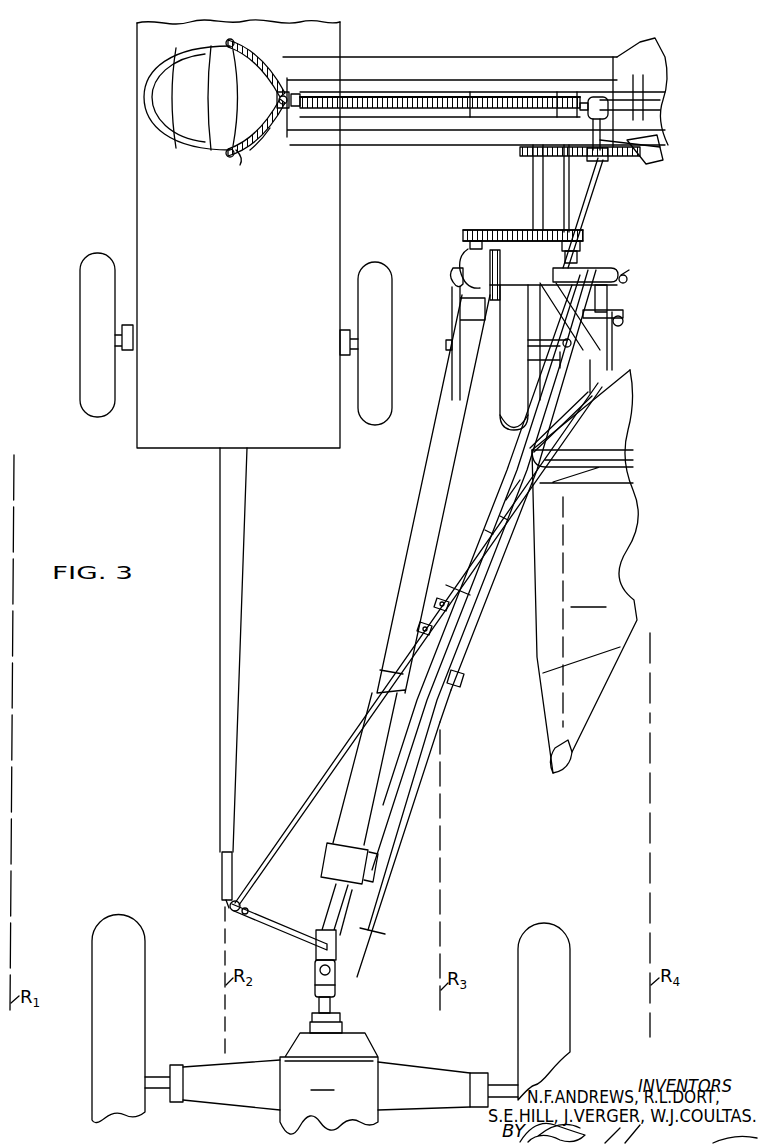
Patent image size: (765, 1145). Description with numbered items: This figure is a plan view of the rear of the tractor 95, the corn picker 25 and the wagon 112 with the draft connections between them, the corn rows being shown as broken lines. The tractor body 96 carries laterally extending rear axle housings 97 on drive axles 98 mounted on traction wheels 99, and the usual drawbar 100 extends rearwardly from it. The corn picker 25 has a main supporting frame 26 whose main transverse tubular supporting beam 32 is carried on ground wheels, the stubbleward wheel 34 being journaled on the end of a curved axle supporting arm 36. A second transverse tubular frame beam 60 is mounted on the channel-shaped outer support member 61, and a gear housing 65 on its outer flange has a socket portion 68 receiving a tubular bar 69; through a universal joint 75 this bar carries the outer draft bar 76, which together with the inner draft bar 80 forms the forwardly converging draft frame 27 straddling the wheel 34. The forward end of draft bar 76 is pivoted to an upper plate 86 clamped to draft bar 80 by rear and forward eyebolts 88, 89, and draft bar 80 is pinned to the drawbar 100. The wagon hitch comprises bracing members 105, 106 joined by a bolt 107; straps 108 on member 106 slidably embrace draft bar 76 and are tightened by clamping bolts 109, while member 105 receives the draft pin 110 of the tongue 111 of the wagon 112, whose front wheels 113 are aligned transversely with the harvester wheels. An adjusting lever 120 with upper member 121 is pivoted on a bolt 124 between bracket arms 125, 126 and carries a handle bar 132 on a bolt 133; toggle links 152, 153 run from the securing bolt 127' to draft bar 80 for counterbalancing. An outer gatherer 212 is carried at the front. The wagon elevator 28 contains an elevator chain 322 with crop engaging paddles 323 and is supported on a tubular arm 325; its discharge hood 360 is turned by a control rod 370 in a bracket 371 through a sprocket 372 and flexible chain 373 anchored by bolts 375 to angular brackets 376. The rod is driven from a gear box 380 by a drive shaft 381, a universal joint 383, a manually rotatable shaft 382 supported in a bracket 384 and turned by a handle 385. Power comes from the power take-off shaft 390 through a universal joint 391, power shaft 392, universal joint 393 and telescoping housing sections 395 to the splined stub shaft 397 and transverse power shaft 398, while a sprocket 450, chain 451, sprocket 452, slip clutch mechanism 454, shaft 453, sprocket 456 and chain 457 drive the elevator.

The corn picker 25 is at (653, 537).
The main supporting frame 26 is at (641, 303).
The draft frame 27 is at (490, 627).
The wagon elevator 28 is at (453, 54).
The main transverse tubular supporting beam 32 is at (620, 327).
The stubbleward ground engaging wheel 34 is at (500, 428).
The axle supporting arm 36 is at (536, 344).
The second transverse tubular frame beam 60 is at (513, 272).
The outer support member 61 is at (540, 298).
The gear housing 65 is at (470, 265).
The socket portion 68 is at (452, 276).
The tubular bar 69 is at (454, 309).
The universal joint 75 is at (442, 352).
The draft bar 76 is at (445, 536).
The draft bar 80 is at (498, 563).
The upper plate 86 is at (447, 702).
The eyebolts 88 is at (462, 680).
The eyebolts 89 is at (420, 760).
The tractor 95 is at (447, 1060).
The tractor body 96 is at (329, 1083).
The rear axle housings 97 is at (225, 1097).
The drive axles 98 is at (175, 1070).
The traction wheels 99 is at (142, 977).
The drawbar 100 is at (337, 1006).
The bracing member 105 is at (272, 915).
The bracing member 106 is at (320, 784).
The bolt 107 is at (243, 914).
The straps 108 is at (449, 590).
The clamping bolts 109 is at (424, 628).
The draft pin 110 is at (228, 908).
The tongue 111 is at (237, 752).
The wagon 112 is at (250, 310).
The front wheels 113 is at (93, 420).
The adjusting lever 120 is at (509, 541).
The upper member 121 is at (505, 520).
The pivot bolt 124 is at (542, 363).
The bracket arm 125 is at (555, 316).
The bracket arm 126 is at (583, 300).
The securing bolt 127' is at (627, 317).
The handle bar 132 is at (362, 905).
The bolt 133 is at (376, 865).
The toggle link 152 is at (572, 406).
The toggle link 153 is at (513, 489).
The outer gatherer 212 is at (591, 703).
The elevator chain 322 is at (505, 95).
The crop engaging paddles 323 is at (400, 78).
The tubular arm 325 is at (533, 182).
The discharge hood 360 is at (203, 135).
The control rod 370 is at (348, 92).
The bracket 371 is at (292, 85).
The sprocket 372 is at (270, 103).
The flexible chain 373 is at (276, 132).
The bolts 375 is at (244, 152).
The angular brackets 376 is at (231, 156).
The gear box 380 is at (593, 96).
The drive shaft 381 is at (640, 140).
The manually rotatable shaft 382 is at (588, 212).
The universal joint 383 is at (608, 166).
The bracket 384 is at (370, 930).
The handle 385 is at (362, 972).
The power take-off shaft 390 is at (319, 1006).
The universal joint 391 is at (316, 982).
The power shaft 392 is at (330, 912).
The universal joint 393 is at (330, 880).
The telescoping housing sections 395 is at (382, 693).
The splined stub shaft 397 is at (470, 247).
The transverse power shaft 398 is at (628, 278).
The sprocket 450 is at (478, 230).
The chain 451 is at (505, 230).
The sprocket 452 is at (578, 240).
The shaft 453 is at (569, 192).
The slip clutch mechanism 454 is at (575, 262).
The sprocket 456 is at (550, 157).
The chain 457 is at (658, 158).